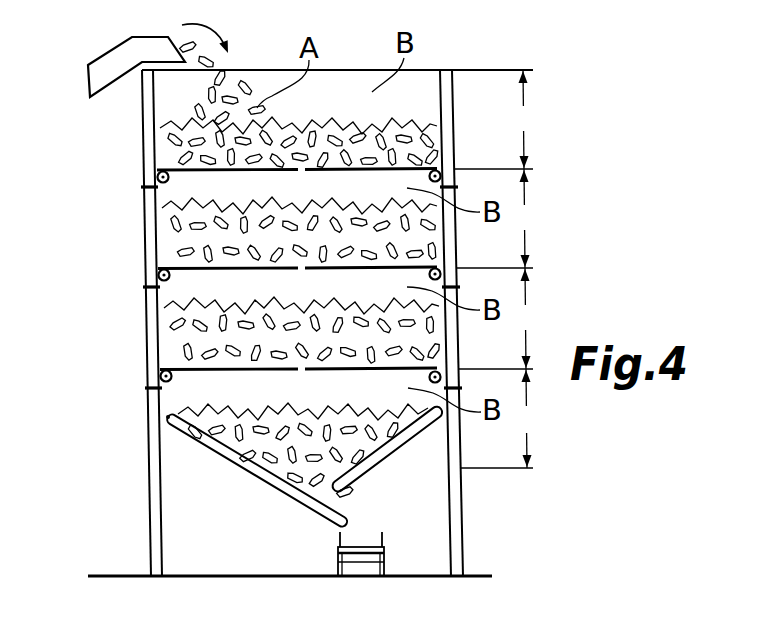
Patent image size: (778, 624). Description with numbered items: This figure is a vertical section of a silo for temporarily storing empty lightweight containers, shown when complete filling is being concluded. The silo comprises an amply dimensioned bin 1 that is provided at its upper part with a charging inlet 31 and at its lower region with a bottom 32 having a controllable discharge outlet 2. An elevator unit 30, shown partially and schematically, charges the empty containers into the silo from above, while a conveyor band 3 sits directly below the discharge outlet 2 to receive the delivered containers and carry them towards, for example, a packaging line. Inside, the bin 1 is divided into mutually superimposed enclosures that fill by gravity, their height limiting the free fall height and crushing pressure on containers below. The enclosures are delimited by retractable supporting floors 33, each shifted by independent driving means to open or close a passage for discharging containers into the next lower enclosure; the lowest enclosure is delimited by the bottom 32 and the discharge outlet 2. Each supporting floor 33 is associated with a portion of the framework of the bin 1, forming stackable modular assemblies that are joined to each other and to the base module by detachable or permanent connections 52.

The bin 1 is at (565, 157).
The discharge outlet 2 is at (366, 489).
The conveyor band 3 is at (338, 557).
The elevator unit 30 is at (112, 60).
The charging inlet 31 is at (246, 59).
The bottom 32 is at (233, 459).
The retractable supporting floors 33 is at (220, 180).
The connections 52 is at (143, 187).